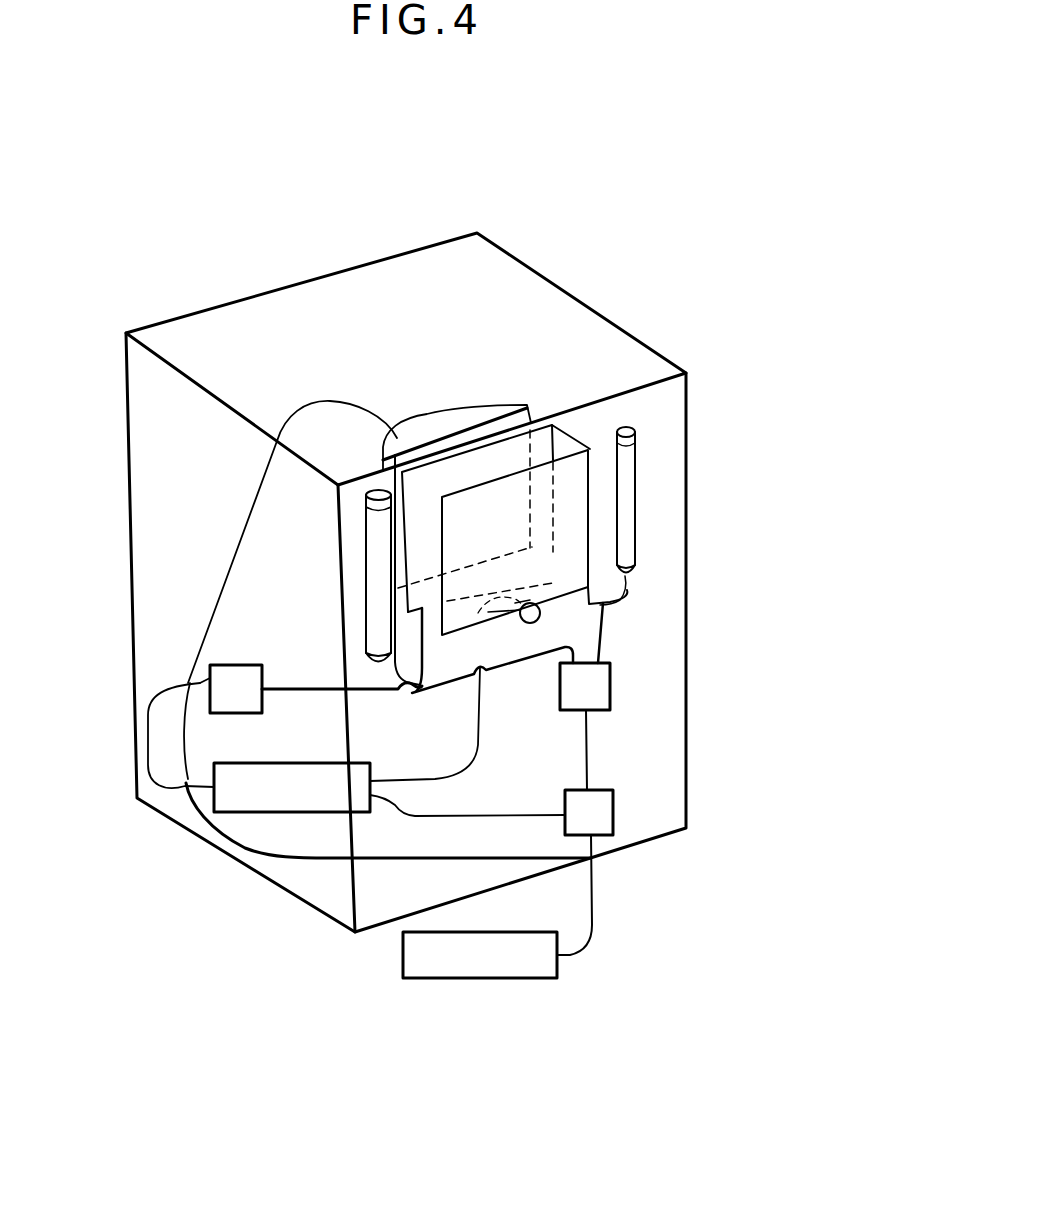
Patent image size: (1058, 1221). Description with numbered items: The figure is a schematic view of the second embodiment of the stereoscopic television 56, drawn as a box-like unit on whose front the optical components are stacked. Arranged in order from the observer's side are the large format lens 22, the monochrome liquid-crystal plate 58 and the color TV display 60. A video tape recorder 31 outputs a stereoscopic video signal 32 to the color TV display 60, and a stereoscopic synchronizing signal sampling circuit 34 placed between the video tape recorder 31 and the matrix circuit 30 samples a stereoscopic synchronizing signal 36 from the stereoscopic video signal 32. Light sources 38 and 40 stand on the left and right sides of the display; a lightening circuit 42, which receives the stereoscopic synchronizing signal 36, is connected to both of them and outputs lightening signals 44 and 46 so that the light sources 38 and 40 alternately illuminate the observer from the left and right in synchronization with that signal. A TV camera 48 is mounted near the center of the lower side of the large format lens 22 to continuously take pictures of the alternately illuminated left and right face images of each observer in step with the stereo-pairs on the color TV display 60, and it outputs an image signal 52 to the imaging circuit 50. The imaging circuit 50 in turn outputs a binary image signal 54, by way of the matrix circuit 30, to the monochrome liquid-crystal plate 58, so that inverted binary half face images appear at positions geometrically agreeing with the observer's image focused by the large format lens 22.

The large format lens 22 is at (575, 448).
The matrix circuit 30 is at (217, 678).
The video tape recorder 31 is at (512, 978).
The stereoscopic video signal 32 is at (237, 560).
The stereoscopic synchronizing signal sampling circuit 34 is at (613, 822).
The stereoscopic synchronizing signal 36 is at (590, 747).
The light source 38 is at (370, 532).
The light source 40 is at (637, 467).
The lightening circuit 42 is at (607, 688).
The lightening signal 44 is at (368, 673).
The lightening signal 46 is at (605, 638).
The TV camera 48 is at (537, 613).
The imaging circuit 50 is at (255, 802).
The image signal 52 is at (480, 757).
The binary image signal 54 is at (146, 738).
The stereoscopic television 56 is at (487, 224).
The monochrome liquid-crystal plate 58 is at (548, 432).
The color TV display 60 is at (497, 410).